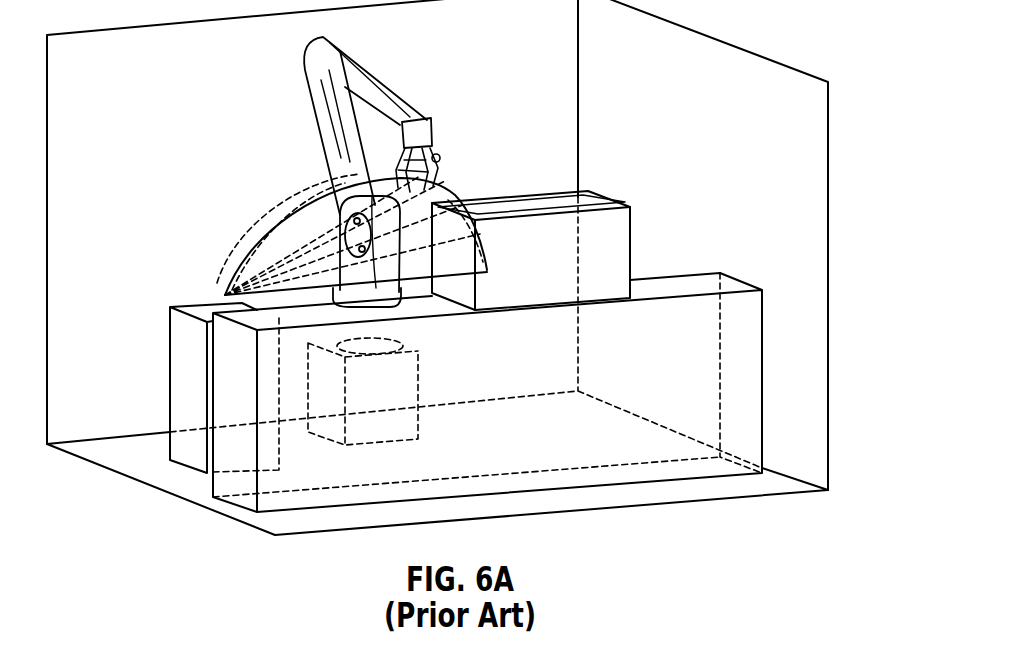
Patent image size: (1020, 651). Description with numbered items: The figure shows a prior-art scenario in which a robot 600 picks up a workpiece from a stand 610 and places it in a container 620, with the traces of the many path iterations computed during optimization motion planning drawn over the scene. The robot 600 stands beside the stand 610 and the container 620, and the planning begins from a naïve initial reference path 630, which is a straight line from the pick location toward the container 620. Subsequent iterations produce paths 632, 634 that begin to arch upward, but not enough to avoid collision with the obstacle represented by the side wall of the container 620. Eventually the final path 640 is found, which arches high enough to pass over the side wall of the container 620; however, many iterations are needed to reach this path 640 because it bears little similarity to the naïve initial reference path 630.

The robot 600 is at (403, 55).
The stand 610 is at (170, 375).
The container 620 is at (632, 238).
The naïve initial reference path 630 is at (432, 282).
The path 632 is at (291, 271).
The path 634 is at (301, 264).
The final path 640 is at (448, 193).